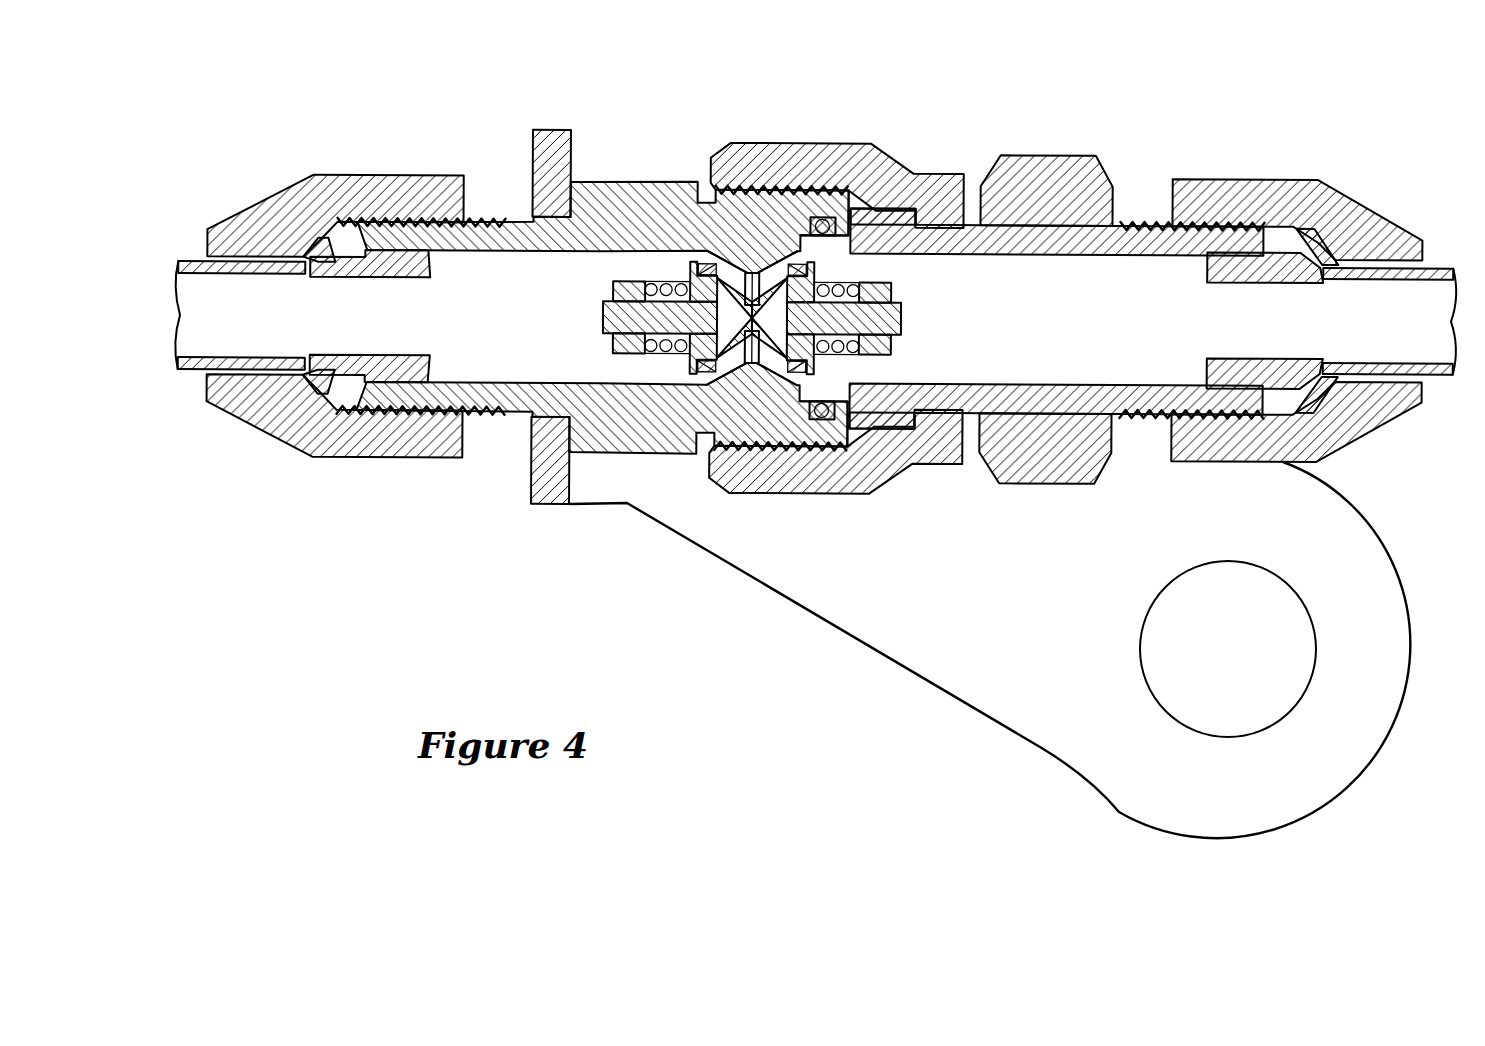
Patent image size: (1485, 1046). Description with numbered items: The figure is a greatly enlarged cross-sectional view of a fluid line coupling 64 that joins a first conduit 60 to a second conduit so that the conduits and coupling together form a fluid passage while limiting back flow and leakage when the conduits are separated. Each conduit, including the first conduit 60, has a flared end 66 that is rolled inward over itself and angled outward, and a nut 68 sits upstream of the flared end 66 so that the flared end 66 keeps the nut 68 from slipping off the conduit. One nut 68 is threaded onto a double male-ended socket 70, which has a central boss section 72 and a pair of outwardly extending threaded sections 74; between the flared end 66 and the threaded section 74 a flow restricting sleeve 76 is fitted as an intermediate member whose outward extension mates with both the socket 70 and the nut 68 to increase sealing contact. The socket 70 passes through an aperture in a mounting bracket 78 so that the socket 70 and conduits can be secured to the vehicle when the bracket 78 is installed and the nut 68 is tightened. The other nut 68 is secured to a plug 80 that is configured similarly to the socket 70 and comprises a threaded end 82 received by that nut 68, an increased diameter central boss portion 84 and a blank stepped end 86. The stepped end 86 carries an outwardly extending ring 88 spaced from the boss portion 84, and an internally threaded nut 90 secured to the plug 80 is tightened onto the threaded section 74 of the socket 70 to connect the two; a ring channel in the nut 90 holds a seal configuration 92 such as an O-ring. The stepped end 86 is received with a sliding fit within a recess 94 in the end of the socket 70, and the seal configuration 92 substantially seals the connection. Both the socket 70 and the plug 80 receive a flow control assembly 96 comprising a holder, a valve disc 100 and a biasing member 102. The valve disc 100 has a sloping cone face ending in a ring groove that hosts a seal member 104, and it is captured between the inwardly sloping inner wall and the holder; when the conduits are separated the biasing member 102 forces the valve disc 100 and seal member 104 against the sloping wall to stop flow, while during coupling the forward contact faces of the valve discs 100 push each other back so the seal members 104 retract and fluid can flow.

The first conduit 60 is at (181, 260).
The fluid line coupling 64 is at (912, 130).
The flared end 66 is at (310, 242).
The nut 68 is at (407, 460).
The double male-ended socket 70 is at (613, 455).
The central boss section 72 is at (580, 457).
The threaded sections 74 is at (750, 188).
The flow restricting sleeve 76 is at (346, 386).
The mounting bracket 78 is at (840, 632).
The plug 80 is at (1026, 486).
The threaded end 82 is at (1168, 228).
The central boss portion 84 is at (1072, 486).
The stepped end 86 is at (873, 222).
The ring 88 is at (903, 217).
The internally threaded nut 90 is at (843, 200).
The seal configuration 92 is at (820, 214).
The recess 94 is at (776, 250).
The flow control assembly 96 is at (584, 322).
The valve disc 100 is at (665, 354).
The biasing member 102 is at (665, 286).
The seal member 104 is at (703, 376).